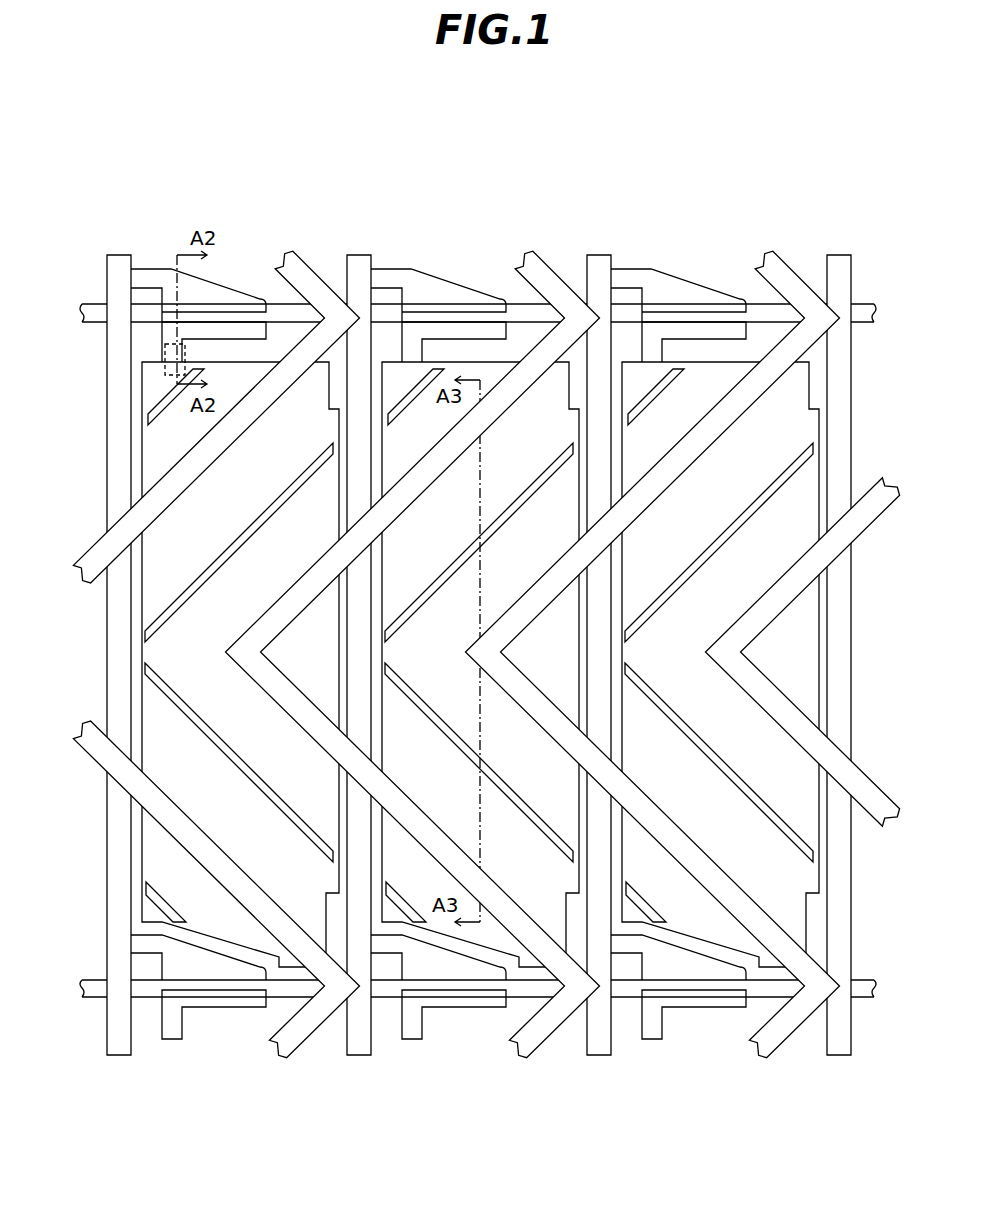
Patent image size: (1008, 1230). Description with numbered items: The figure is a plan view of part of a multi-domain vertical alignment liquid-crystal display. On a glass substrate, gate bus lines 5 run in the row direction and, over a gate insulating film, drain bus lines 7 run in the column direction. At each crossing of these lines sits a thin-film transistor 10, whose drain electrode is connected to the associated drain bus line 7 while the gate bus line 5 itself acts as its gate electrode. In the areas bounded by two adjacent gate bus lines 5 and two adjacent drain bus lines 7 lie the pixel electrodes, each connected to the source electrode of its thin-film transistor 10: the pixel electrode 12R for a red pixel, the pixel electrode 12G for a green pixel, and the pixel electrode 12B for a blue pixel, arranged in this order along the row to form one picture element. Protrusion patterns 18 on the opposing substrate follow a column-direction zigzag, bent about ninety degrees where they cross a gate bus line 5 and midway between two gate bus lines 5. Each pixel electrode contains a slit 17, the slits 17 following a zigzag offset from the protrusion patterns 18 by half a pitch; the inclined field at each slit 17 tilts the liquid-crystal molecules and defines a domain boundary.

The gate bus line 5 is at (872, 988).
The drain bus line 7 is at (118, 253).
The thin-film transistor 10 is at (254, 296).
The pixel electrode for a red pixel 12R is at (140, 437).
The pixel electrode for a green pixel 12G is at (467, 940).
The pixel electrode for a blue pixel 12B is at (820, 473).
The slit 17 is at (193, 577).
The protrusion pattern 18 is at (292, 259).